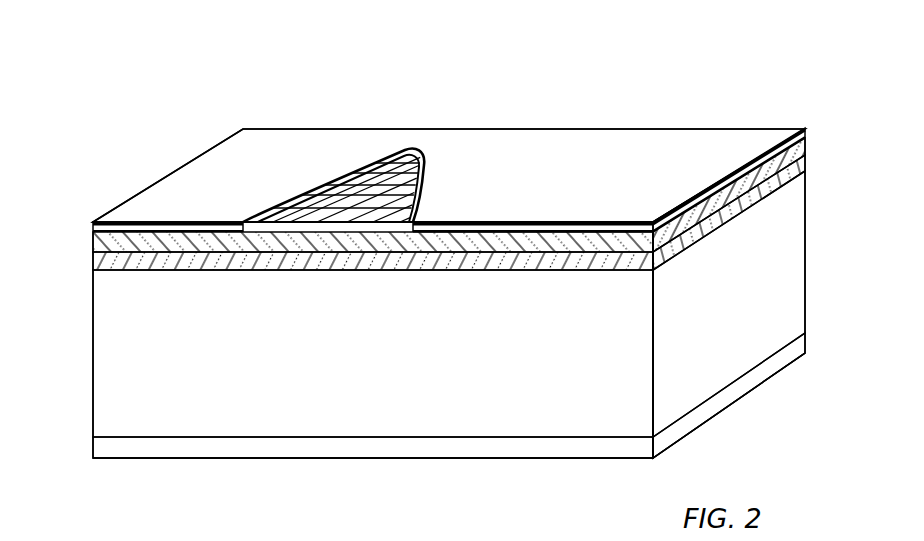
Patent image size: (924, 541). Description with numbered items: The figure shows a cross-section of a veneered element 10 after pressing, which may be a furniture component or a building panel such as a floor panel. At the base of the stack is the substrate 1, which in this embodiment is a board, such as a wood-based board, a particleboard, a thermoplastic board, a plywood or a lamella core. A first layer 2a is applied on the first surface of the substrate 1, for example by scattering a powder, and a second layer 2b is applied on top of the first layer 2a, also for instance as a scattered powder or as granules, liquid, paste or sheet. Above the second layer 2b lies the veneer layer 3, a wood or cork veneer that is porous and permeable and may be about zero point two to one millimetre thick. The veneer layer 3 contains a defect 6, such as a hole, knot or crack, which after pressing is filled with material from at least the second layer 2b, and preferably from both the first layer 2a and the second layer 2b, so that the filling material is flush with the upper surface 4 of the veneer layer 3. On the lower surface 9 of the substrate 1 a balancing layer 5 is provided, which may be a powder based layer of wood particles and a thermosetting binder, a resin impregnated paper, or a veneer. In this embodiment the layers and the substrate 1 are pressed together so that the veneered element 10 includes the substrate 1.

The veneered element 10 is at (160, 140).
The substrate 1 is at (125, 348).
The first layer 2a is at (93, 257).
The second layer 2b is at (93, 233).
The veneer layer 3 is at (617, 151).
The upper surface 4 is at (510, 222).
The balancing layer 5 is at (485, 453).
The defect 6 is at (382, 148).
The lower surface 9 is at (308, 438).